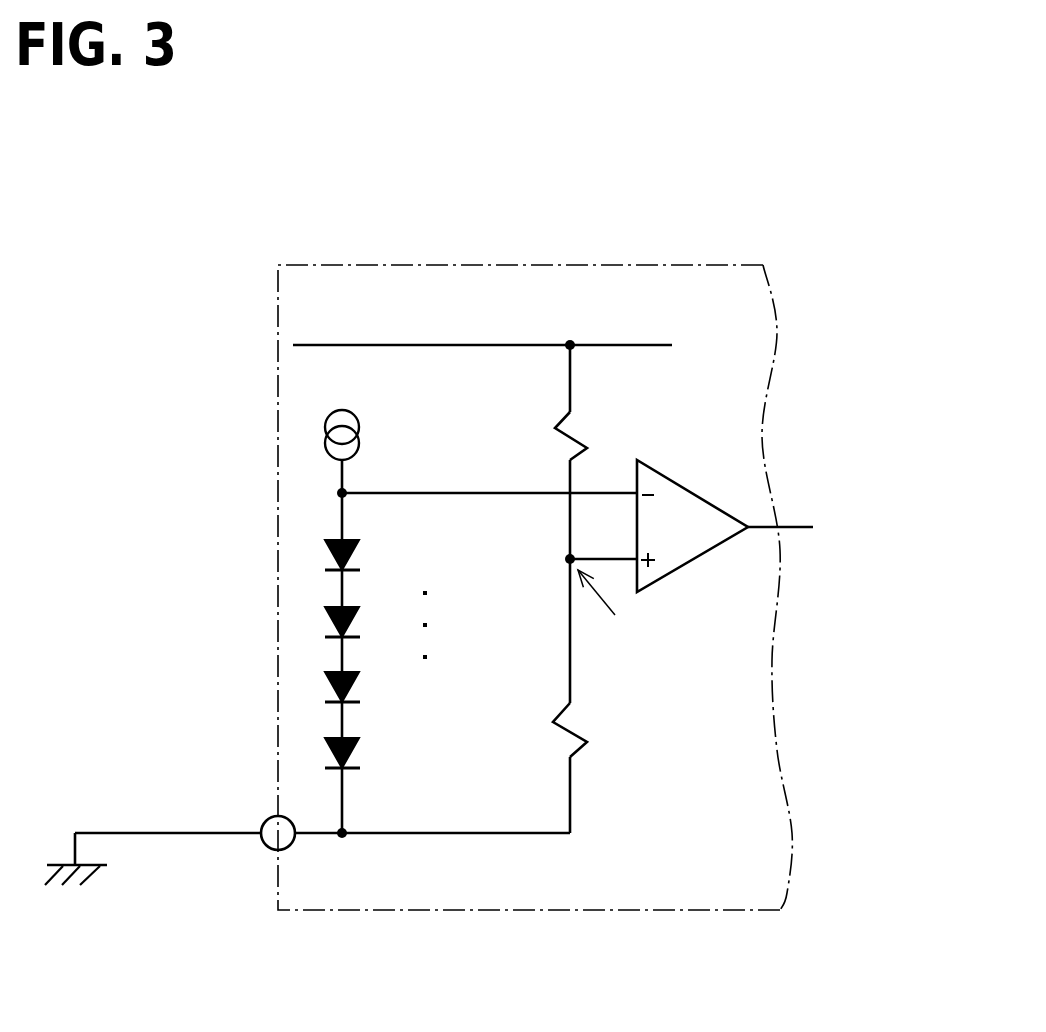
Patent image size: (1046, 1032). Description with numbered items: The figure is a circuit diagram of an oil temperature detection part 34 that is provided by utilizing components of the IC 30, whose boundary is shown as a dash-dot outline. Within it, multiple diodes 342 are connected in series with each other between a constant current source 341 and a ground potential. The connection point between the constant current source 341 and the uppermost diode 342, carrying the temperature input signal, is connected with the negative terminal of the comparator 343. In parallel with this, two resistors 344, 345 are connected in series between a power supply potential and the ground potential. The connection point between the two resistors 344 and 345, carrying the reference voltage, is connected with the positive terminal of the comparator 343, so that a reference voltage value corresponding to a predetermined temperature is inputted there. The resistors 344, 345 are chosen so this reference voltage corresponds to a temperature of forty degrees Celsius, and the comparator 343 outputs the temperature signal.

The IC 30 is at (500, 910).
The oil temperature detection part 34 is at (308, 475).
The constant current source 341 is at (359, 423).
The diode 342 is at (361, 553).
The comparator 343 is at (690, 491).
The resistor 344 is at (580, 437).
The resistor 345 is at (578, 732).